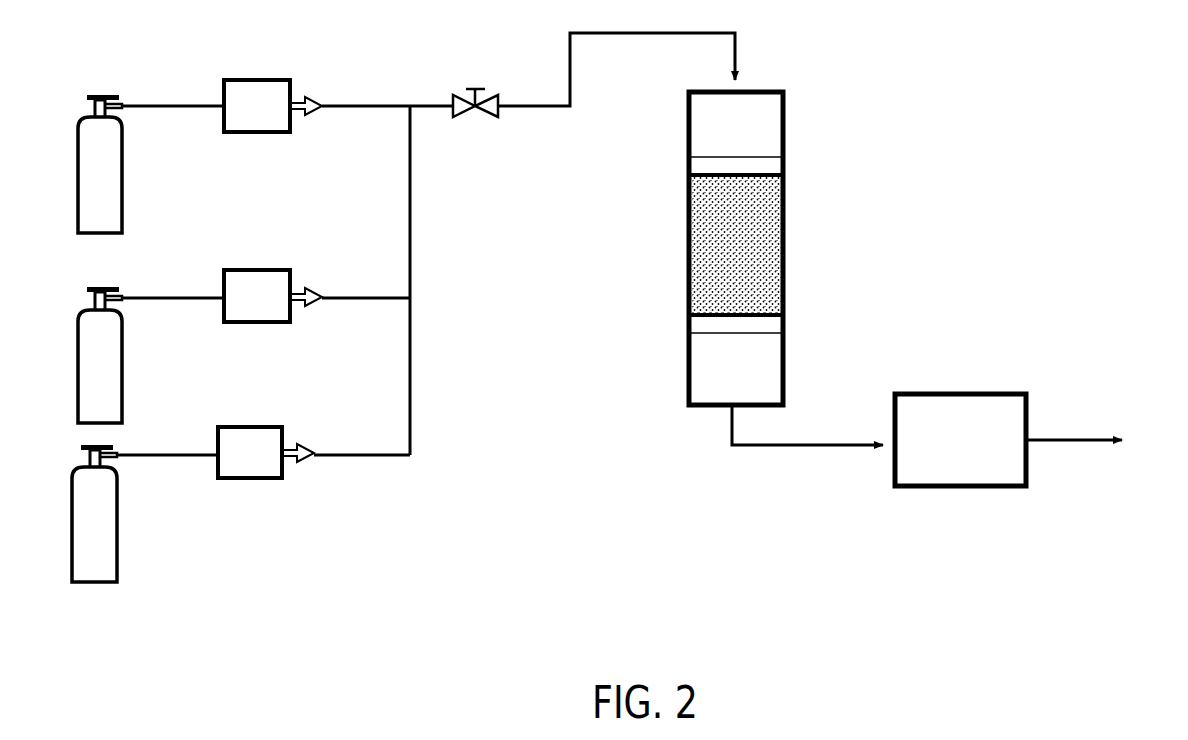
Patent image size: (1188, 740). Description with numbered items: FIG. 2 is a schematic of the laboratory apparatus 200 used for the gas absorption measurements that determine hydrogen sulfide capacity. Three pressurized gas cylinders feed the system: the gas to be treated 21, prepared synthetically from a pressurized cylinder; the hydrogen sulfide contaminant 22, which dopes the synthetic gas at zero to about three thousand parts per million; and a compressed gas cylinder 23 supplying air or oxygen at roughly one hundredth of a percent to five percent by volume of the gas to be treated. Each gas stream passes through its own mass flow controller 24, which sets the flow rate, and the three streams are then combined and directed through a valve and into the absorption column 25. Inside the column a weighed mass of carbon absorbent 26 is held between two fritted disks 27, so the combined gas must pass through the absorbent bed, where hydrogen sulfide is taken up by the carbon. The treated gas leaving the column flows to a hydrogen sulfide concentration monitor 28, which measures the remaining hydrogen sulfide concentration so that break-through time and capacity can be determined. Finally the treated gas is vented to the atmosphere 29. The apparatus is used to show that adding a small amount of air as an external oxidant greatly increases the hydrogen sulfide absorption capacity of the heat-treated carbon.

The system 200 is at (789, 600).
The gas to be treated 21 is at (130, 175).
The hydrogen sulfide contaminant 22 is at (132, 357).
The compressed gas cylinder 23 is at (130, 522).
The mass flow controller 24 is at (264, 70).
The absorption column 25 is at (808, 118).
The carbon absorbent 26 is at (770, 233).
The frit 27 is at (795, 165).
The analyzer 28 is at (965, 380).
The vent to atmosphere 29 is at (1101, 440).